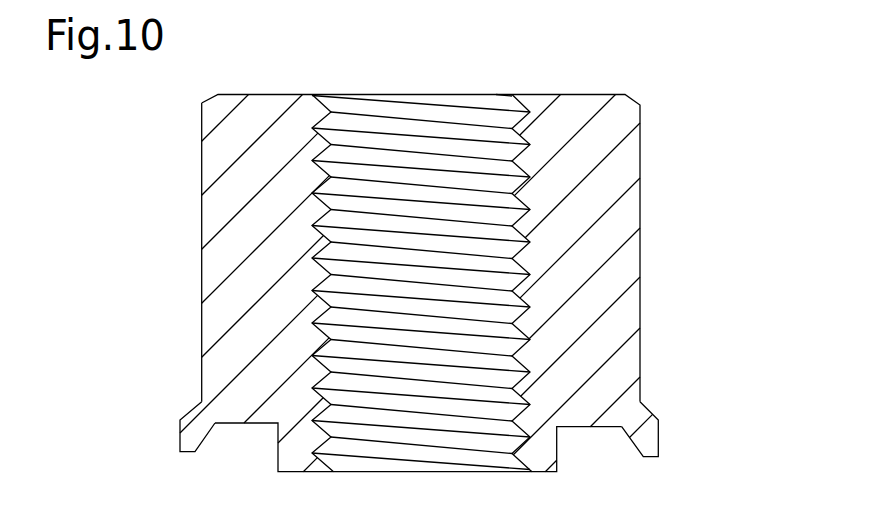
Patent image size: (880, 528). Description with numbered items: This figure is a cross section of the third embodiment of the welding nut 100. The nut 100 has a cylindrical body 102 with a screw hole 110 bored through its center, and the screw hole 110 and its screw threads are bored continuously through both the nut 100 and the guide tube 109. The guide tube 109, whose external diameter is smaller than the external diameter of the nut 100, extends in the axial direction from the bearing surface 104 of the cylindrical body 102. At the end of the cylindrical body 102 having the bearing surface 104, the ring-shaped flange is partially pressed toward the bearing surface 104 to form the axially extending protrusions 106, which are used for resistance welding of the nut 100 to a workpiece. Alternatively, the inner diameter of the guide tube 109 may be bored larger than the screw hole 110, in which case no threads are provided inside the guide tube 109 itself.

The welding nut 100 is at (403, 276).
The cylindrical body 102 is at (202, 233).
The bearing surface 104 is at (244, 423).
The protrusions 106 is at (180, 437).
The guide tube 109 is at (557, 453).
The screw hole 110 is at (473, 117).